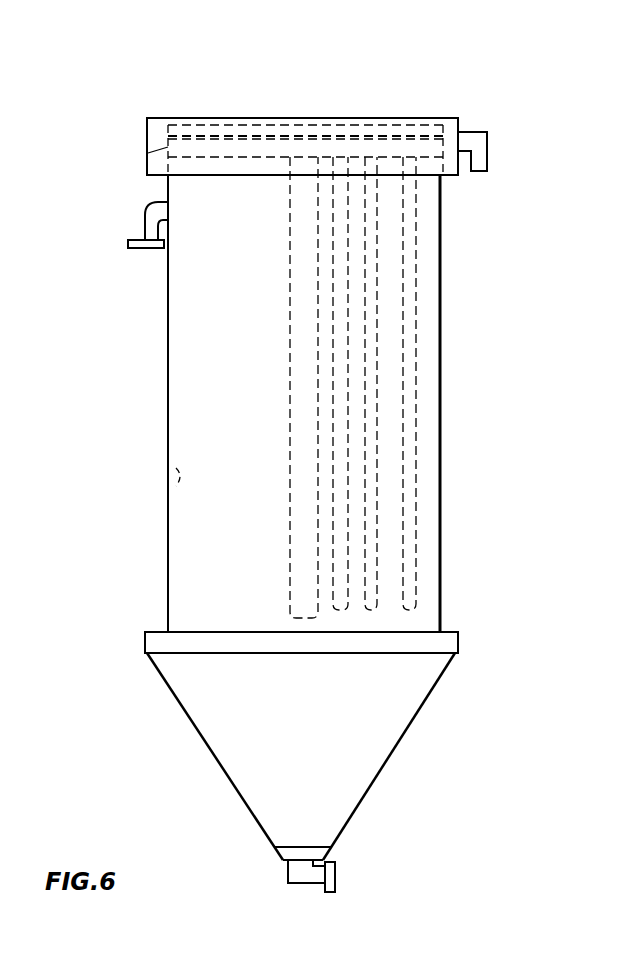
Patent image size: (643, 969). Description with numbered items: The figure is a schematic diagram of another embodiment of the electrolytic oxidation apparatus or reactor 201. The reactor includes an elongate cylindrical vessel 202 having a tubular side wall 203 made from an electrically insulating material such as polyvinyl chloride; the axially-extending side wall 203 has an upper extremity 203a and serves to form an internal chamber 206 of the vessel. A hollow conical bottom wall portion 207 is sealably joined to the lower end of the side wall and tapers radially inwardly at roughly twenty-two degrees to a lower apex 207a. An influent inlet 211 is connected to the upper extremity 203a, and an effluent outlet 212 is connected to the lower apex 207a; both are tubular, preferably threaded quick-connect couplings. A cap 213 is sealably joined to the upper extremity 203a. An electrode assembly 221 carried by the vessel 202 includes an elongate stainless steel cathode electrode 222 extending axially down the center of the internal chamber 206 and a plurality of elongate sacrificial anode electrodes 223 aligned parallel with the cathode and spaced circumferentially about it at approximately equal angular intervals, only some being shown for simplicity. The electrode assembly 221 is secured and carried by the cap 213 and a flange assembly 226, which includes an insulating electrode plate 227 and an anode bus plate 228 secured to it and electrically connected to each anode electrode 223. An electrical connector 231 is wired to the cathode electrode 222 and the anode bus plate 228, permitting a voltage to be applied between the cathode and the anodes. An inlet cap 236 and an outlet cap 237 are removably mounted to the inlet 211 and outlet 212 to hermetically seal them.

The electrolytic oxidation reactor 201 is at (316, 485).
The elongate cylindrical vessel 202 is at (309, 485).
The tubular side wall 203 is at (165, 388).
The upper extremity of side wall 203a is at (168, 188).
The internal chamber 206 is at (170, 465).
The conical bottom wall portion 207 is at (335, 750).
The lower apex 207a is at (328, 828).
The influent inlet 211 is at (103, 253).
The effluent outlet 212 is at (333, 892).
The cap 213 is at (432, 118).
The electrode assembly 221 is at (278, 208).
The cathode electrode 222 is at (300, 305).
The sacrificial anode electrodes 223 is at (384, 387).
The flange assembly 226 is at (187, 124).
The electrode plate 227 is at (143, 152).
The anode bus plate 228 is at (321, 142).
The electrical connector 231 is at (487, 156).
The inlet cap 236 is at (145, 246).
The outlet cap 237 is at (335, 876).